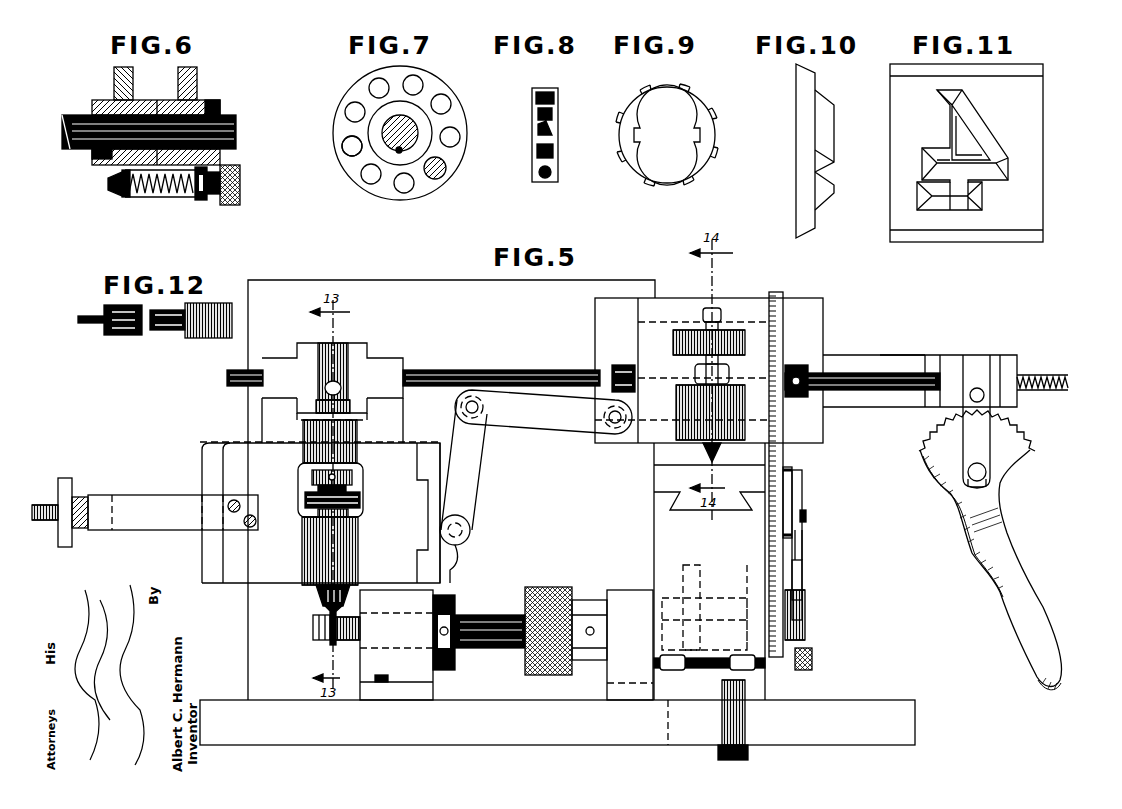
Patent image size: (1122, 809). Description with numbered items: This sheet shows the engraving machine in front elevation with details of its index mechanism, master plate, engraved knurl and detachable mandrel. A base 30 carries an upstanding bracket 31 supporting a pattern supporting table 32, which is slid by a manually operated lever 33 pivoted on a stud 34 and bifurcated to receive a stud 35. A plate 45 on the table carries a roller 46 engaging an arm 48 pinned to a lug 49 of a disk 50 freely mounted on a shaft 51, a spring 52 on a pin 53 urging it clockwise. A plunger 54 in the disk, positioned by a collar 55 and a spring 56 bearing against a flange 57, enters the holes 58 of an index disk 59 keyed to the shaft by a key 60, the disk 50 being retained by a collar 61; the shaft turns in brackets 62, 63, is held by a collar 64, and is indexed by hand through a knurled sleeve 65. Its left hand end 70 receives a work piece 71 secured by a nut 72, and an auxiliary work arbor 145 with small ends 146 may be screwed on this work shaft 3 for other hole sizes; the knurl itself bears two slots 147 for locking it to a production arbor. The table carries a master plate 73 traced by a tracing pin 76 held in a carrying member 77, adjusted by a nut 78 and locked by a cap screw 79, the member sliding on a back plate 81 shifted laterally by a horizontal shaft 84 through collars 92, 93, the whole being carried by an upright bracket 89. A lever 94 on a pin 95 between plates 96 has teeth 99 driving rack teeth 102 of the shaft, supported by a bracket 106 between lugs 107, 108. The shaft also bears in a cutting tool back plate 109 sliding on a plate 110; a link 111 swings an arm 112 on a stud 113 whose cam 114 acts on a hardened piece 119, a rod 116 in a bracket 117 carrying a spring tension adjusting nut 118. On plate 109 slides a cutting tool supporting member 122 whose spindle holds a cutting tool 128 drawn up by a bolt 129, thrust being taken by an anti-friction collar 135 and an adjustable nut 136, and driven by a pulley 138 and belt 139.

In FIG. 5, the shaft 3 is at (848, 372).
In FIG. 5, the base 30 is at (810, 712).
In FIG. 5, the upstanding bracket 31 is at (662, 512).
In FIG. 5, the pattern supporting table 32 is at (660, 478).
In FIG. 5, the manually operated lever 33 is at (783, 454).
In FIG. 5, the stud 34 is at (792, 470).
In FIG. 5, the stud 35 is at (805, 625).
In FIG. 5, the plate 45 is at (802, 500).
In FIG. 5, the roller 46 is at (806, 517).
In FIG. 5, the arm 48 is at (802, 540).
In FIG. 5, the lug 49 is at (802, 575).
In FIG. 6, the disk 50 is at (178, 73).
In FIG. 5, the disk 50 is at (747, 565).
In FIG. 6, the shaft 51 is at (222, 112).
In FIG. 7, the shaft 51 is at (392, 124).
In FIG. 5, the shaft 51 is at (468, 648).
In FIG. 5, the spring 52 is at (720, 720).
In FIG. 5, the pin 53 is at (715, 690).
In FIG. 6, the plunger 54 is at (214, 200).
In FIG. 7, the plunger 54 is at (452, 173).
In FIG. 5, the plunger 54 is at (810, 648).
In FIG. 6, the collar 55 is at (201, 200).
In FIG. 6, the spring 56 is at (150, 197).
In FIG. 6, the flange 57 is at (128, 197).
In FIG. 6, the holes 58 is at (108, 183).
In FIG. 7, the holes 58 is at (344, 133).
In FIG. 6, the index disk 59 is at (128, 105).
In FIG. 7, the index disk 59 is at (345, 105).
In FIG. 5, the index disk 59 is at (700, 565).
In FIG. 6, the key 60 is at (95, 155).
In FIG. 7, the key 60 is at (395, 150).
In FIG. 6, the collar 61 is at (220, 104).
In FIG. 5, the bracket 62 is at (420, 675).
In FIG. 5, the bracket 63 is at (612, 673).
In FIG. 5, the collar 64 is at (457, 665).
In FIG. 5, the knurled sleeve 65 is at (525, 590).
In FIG. 12, the left hand end 70 is at (175, 338).
In FIG. 5, the left hand end 70 is at (345, 642).
In FIG. 8, the work piece 71 is at (558, 176).
In FIG. 9, the work piece 71 is at (690, 167).
In FIG. 5, the work piece 71 is at (330, 644).
In FIG. 5, the nut 72 is at (313, 628).
In FIG. 10, the master plate 73 is at (800, 190).
In FIG. 11, the master plate 73 is at (900, 190).
In FIG. 5, the tracing pin 76 is at (722, 450).
In FIG. 5, the carrying member 77 is at (727, 330).
In FIG. 5, the nut 78 is at (730, 375).
In FIG. 5, the cap screw 79 is at (715, 308).
In FIG. 5, the back plate 81 is at (600, 444).
In FIG. 5, the horizontal shaft 84 is at (880, 372).
In FIG. 5, the upright bracket 89 is at (378, 282).
In FIG. 5, the collar 92 is at (800, 394).
In FIG. 5, the collar 93 is at (620, 365).
In FIG. 5, the lever 94 is at (1000, 480).
In FIG. 5, the pin 95 is at (988, 468).
In FIG. 5, the plate 96 is at (983, 448).
In FIG. 5, the teeth 99 is at (1020, 430).
In FIG. 5, the rack teeth 102 is at (1080, 382).
In FIG. 5, the bracket 106 is at (905, 356).
In FIG. 5, the lug 107 is at (935, 368).
In FIG. 5, the lug 108 is at (1010, 372).
In FIG. 5, the cutting tool back plate 109 is at (396, 360).
In FIG. 5, the plate 110 is at (455, 570).
In FIG. 5, the link 111 is at (522, 430).
In FIG. 5, the arm 112 is at (478, 470).
In FIG. 5, the stud 113 is at (462, 522).
In FIG. 5, the cam 114 is at (363, 508).
In FIG. 5, the rod 116 is at (45, 505).
In FIG. 5, the bracket 117 is at (166, 498).
In FIG. 5, the spring tension adjusting nut 118 is at (65, 478).
In FIG. 5, the hardened piece 119 is at (424, 480).
In FIG. 5, the cutting tool supporting member 122 is at (300, 585).
In FIG. 5, the cutting tool 128 is at (328, 607).
In FIG. 5, the bolt 129 is at (342, 388).
In FIG. 5, the anti-friction collar 135 is at (352, 407).
In FIG. 5, the adjustable nut 136 is at (362, 472).
In FIG. 5, the pulley 138 is at (352, 485).
In FIG. 5, the belt 139 is at (360, 502).
In FIG. 12, the auxiliary work arbor 145 is at (118, 335).
In FIG. 12, the small ends 146 is at (97, 323).
In FIG. 9, the slots 147 is at (695, 136).